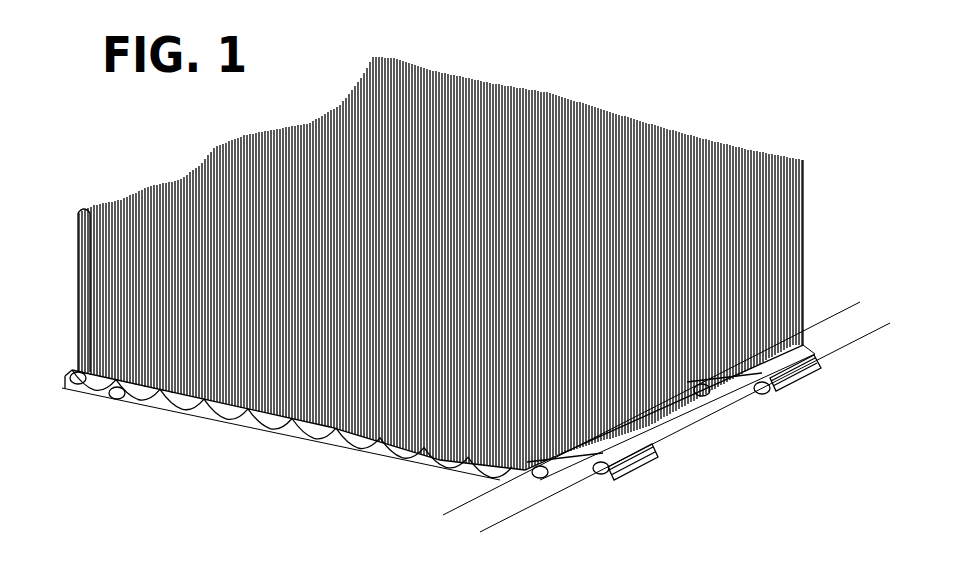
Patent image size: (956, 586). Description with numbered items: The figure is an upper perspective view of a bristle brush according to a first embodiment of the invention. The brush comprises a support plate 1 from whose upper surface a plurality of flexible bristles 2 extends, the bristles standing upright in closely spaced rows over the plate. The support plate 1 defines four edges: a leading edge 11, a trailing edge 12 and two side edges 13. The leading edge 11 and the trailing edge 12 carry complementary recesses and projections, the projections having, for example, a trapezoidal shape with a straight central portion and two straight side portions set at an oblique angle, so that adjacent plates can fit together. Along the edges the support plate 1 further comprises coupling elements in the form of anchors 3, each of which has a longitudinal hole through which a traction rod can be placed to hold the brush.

The support plate 1 is at (252, 448).
The flexible bristles 2 is at (630, 145).
The anchors 3 is at (117, 399).
The leading edge 11 is at (808, 392).
The trailing edge 12 is at (66, 268).
The side edges 13 is at (816, 286).